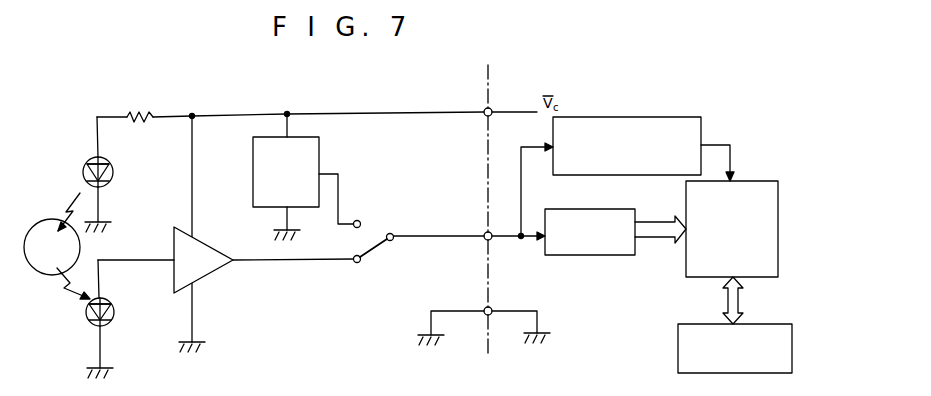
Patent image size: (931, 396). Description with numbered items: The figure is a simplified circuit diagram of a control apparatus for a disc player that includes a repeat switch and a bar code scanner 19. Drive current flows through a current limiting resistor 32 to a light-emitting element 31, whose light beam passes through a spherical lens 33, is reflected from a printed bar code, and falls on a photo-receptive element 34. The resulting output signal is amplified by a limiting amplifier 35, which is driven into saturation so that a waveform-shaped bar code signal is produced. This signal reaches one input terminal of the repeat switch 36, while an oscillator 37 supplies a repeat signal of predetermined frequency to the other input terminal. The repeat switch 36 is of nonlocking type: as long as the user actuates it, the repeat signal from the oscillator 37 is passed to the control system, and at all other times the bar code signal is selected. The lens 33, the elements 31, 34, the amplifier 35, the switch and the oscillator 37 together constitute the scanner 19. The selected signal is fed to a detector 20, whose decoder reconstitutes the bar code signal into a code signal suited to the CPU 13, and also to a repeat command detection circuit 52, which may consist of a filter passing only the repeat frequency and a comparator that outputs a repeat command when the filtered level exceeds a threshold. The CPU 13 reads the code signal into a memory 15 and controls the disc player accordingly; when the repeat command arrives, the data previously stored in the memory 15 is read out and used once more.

The scanner 19 is at (301, 73).
The CPU 13 is at (750, 180).
The memory 15 is at (759, 324).
The detector 20 is at (588, 255).
The light-emitting element 31 is at (85, 165).
The current limiting resistor 32 is at (144, 110).
The spherical lens 33 is at (49, 221).
The photo-receptive element 34 is at (114, 305).
The limiting amplifier 35 is at (208, 273).
The repeat switch 36 is at (387, 231).
The oscillator 37 is at (320, 146).
The repeat command detection circuit 52 is at (650, 117).